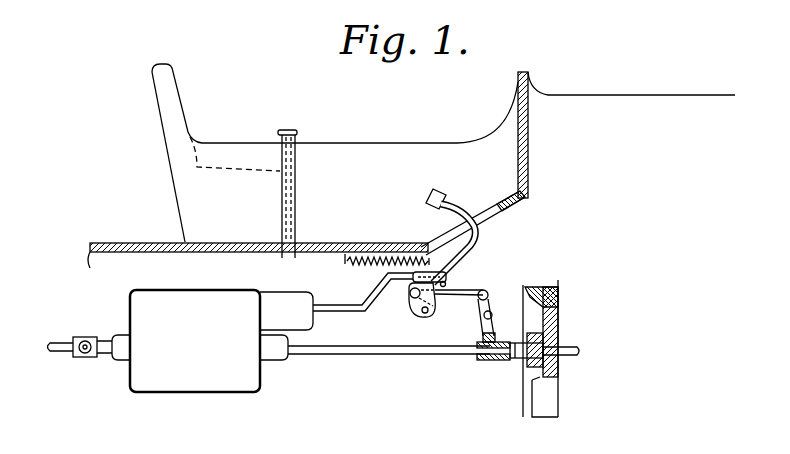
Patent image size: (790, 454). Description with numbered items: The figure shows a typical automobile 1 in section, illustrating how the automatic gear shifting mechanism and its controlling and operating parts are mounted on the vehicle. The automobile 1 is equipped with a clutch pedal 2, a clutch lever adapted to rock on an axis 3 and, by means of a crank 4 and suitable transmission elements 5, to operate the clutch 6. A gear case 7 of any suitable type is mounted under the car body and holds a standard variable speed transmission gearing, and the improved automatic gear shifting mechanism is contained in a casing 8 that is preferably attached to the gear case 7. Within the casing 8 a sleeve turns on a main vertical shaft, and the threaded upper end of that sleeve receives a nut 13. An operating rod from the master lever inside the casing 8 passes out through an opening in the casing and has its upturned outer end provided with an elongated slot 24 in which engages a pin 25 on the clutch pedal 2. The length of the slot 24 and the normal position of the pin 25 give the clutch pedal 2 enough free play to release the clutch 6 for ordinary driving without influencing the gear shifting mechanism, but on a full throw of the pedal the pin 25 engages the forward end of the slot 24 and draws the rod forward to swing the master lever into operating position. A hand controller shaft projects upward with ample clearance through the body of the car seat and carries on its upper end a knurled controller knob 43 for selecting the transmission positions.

The automobile 1 is at (117, 243).
The knurled controller knob 43 is at (293, 128).
The clutch pedal 2 is at (447, 205).
The elongated slot 24 is at (445, 277).
The pin 25 is at (446, 283).
The crank 4 is at (412, 298).
The axis 3 is at (425, 313).
The nut 13 is at (340, 300).
The transmission elements 5 is at (496, 295).
The clutch 6 is at (533, 293).
The gear case 7 is at (220, 378).
The casing 8 is at (304, 318).